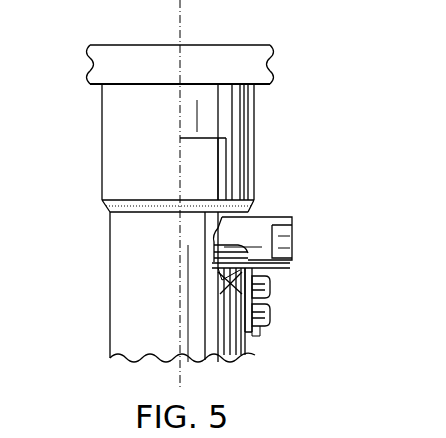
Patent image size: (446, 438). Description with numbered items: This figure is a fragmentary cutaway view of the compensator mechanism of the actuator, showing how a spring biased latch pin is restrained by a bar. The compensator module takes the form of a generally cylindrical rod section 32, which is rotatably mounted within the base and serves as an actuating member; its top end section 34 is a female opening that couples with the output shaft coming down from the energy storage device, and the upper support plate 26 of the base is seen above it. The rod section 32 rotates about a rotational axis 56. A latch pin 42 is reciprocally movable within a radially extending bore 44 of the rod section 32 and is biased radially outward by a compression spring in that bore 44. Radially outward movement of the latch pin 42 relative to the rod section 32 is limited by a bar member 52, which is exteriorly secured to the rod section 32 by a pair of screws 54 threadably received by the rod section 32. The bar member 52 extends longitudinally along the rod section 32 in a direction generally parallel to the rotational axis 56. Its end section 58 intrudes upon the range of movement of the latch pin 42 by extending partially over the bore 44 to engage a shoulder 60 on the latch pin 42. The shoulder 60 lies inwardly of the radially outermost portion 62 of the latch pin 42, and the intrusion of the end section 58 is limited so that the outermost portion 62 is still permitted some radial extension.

The upper support plate 26 is at (235, 47).
The rotational axis 56 is at (178, 10).
The top end section 34 is at (108, 125).
The rod section 32 is at (120, 279).
The latch pin 42 is at (262, 217).
The radially outermost portion 62 is at (295, 220).
The shoulder 60 is at (215, 246).
The end section 58 is at (262, 265).
The screws 54 is at (268, 312).
The bar member 52 is at (255, 336).
The bore 44 is at (220, 280).